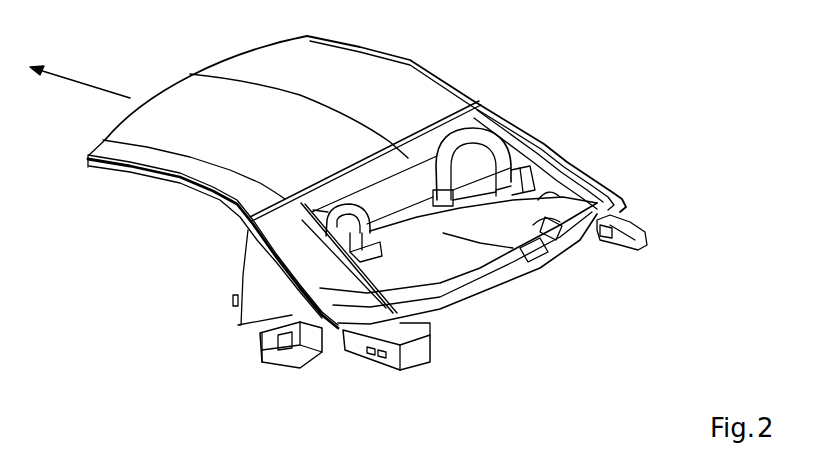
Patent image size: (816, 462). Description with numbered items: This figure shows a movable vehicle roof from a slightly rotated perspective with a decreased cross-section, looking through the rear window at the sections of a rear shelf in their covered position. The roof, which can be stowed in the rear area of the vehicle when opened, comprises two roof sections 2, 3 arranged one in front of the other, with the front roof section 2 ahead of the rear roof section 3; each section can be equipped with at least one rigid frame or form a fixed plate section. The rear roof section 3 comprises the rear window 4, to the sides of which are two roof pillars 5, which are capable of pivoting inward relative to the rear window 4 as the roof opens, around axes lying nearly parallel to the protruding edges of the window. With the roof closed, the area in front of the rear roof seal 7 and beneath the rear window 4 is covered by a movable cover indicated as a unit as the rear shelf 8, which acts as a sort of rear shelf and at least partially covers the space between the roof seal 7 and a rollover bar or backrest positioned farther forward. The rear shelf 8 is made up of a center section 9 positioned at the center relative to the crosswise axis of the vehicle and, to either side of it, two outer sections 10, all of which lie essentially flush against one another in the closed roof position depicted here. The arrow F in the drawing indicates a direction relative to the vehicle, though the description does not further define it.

The front roof section 2 is at (384, 62).
The rear roof section 3 is at (551, 117).
The rear window 4 is at (406, 198).
The roof pillars 5 is at (505, 113).
The rear roof seal 7 is at (527, 260).
The rear shelf 8 is at (548, 199).
The center section 9 is at (552, 221).
The outer sections 10 is at (587, 174).
The direction of travel F is at (80, 83).